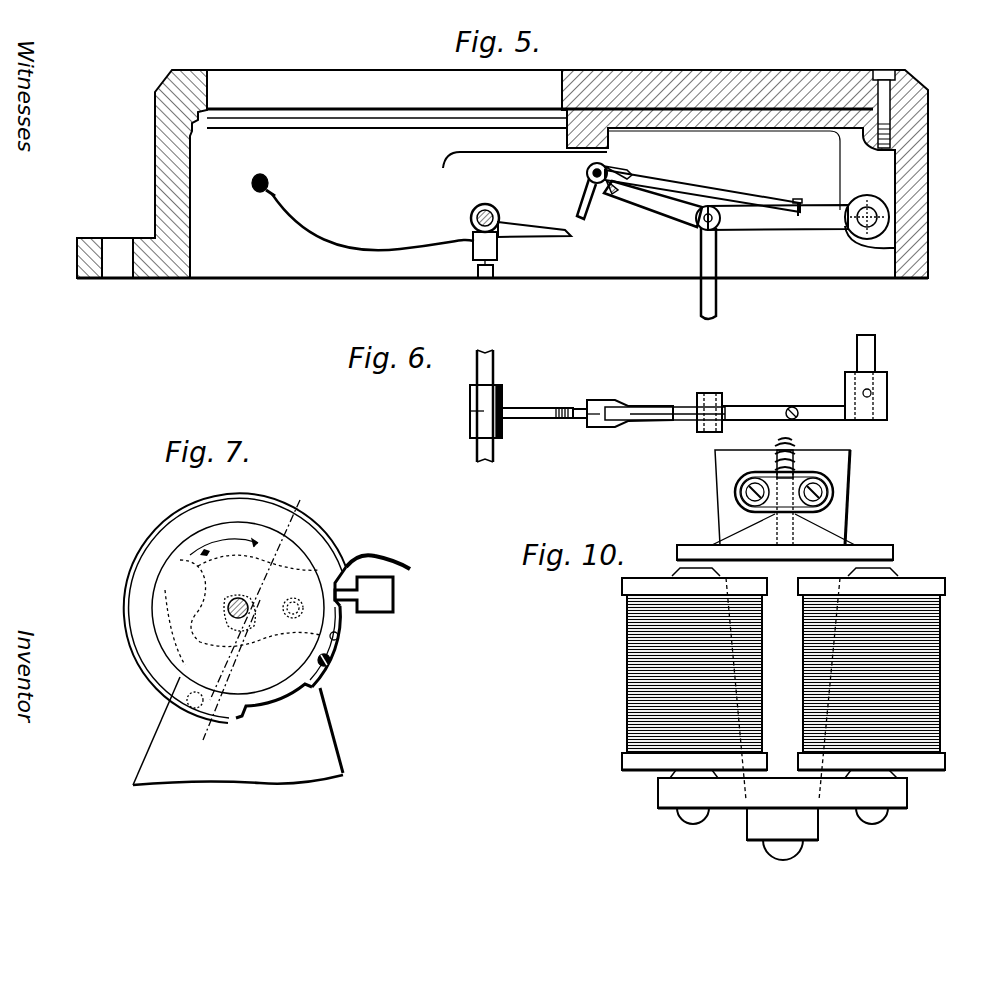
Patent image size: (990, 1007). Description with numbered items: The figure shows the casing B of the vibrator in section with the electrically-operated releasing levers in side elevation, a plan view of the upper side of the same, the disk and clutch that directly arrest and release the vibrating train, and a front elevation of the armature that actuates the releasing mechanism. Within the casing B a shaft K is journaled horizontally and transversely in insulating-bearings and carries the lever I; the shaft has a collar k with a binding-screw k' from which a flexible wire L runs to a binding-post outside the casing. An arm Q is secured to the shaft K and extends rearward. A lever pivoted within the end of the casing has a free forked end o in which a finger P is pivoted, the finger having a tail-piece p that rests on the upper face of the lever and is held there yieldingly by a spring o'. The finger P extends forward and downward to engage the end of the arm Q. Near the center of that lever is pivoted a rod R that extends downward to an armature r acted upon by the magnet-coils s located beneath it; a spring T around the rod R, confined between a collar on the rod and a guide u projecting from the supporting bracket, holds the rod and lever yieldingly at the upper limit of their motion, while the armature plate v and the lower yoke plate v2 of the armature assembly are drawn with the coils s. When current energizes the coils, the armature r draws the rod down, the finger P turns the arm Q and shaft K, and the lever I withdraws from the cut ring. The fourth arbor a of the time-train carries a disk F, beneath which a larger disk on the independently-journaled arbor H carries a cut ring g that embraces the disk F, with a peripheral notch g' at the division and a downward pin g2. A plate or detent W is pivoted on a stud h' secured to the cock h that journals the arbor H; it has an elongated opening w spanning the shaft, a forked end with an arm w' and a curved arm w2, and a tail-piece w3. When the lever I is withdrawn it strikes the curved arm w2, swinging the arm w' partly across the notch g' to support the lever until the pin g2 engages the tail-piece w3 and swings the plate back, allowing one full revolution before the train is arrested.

In FIG. 5, the casing B is at (172, 130).
In FIG. 5, the flexible wire L is at (363, 212).
In FIG. 5, the shaft K is at (489, 210).
In FIG. 6, the shaft K is at (486, 376).
In FIG. 5, the collar k is at (499, 247).
In FIG. 5, the binding-screw k' is at (486, 284).
In FIG. 5, the arm Q is at (570, 234).
In FIG. 6, the arm Q is at (546, 420).
In FIG. 5, the finger P is at (590, 182).
In FIG. 6, the finger P is at (579, 407).
In FIG. 5, the tail-piece p is at (616, 177).
In FIG. 6, the tail-piece p is at (605, 403).
In FIG. 5, the spring o' is at (702, 189).
In FIG. 6, the spring o' is at (665, 400).
In FIG. 5, the forked end o is at (726, 217).
In FIG. 6, the forked end o is at (804, 377).
In FIG. 5, the rod R is at (722, 273).
In FIG. 6, the rod R is at (709, 412).
In FIG. 10, the spring T is at (795, 465).
In FIG. 10, the guide u is at (834, 480).
In FIG. 10, the armature plate v is at (842, 505).
In FIG. 10, the armature r is at (702, 548).
In FIG. 10, the magnet-coils s is at (782, 684).
In FIG. 10, the lower yoke plate v2 is at (752, 820).
In FIG. 7, the disk F is at (182, 565).
In FIG. 7, the arbor H is at (262, 590).
In FIG. 7, the stud or pin h' is at (318, 559).
In FIG. 7, the ring g is at (233, 608).
In FIG. 7, the peripheral notch g' is at (380, 540).
In FIG. 7, the pin g2 is at (178, 706).
In FIG. 7, the curved arm w2 is at (405, 556).
In FIG. 7, the lever I is at (396, 600).
In FIG. 7, the plate or detent W is at (200, 614).
In FIG. 7, the arm w' is at (391, 630).
In FIG. 7, the tail-piece w3 is at (205, 655).
In FIG. 7, the elongated opening w is at (224, 677).
In FIG. 7, the fourth arbor a is at (320, 690).
In FIG. 7, the cock h is at (247, 731).